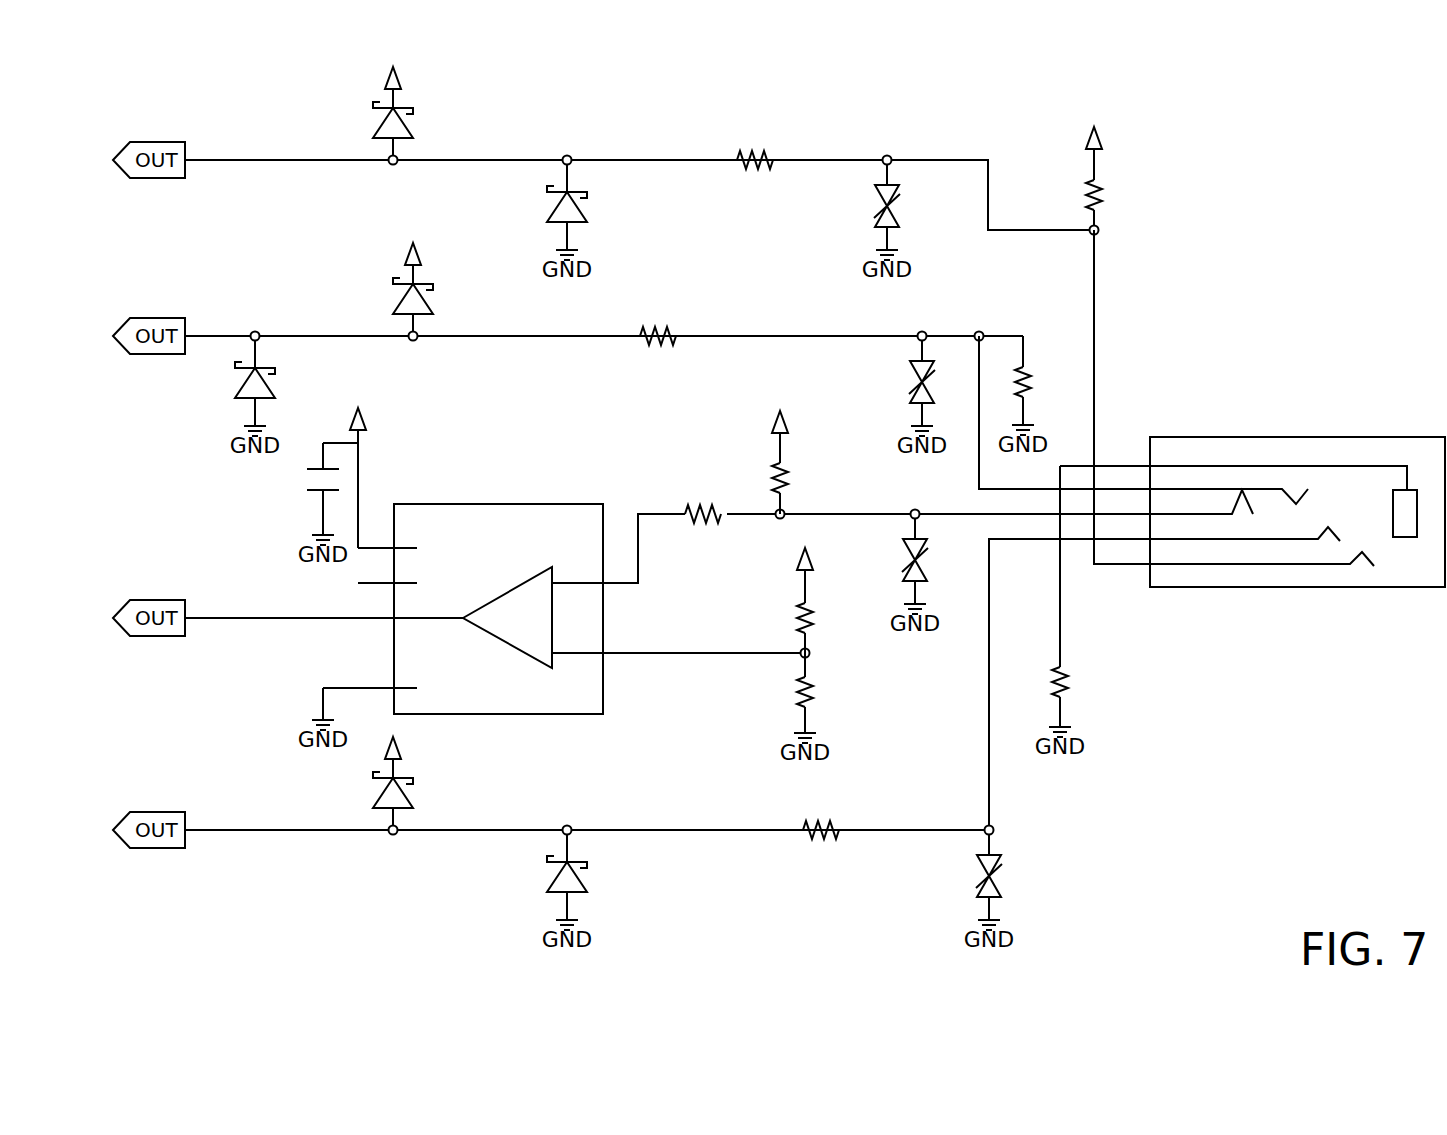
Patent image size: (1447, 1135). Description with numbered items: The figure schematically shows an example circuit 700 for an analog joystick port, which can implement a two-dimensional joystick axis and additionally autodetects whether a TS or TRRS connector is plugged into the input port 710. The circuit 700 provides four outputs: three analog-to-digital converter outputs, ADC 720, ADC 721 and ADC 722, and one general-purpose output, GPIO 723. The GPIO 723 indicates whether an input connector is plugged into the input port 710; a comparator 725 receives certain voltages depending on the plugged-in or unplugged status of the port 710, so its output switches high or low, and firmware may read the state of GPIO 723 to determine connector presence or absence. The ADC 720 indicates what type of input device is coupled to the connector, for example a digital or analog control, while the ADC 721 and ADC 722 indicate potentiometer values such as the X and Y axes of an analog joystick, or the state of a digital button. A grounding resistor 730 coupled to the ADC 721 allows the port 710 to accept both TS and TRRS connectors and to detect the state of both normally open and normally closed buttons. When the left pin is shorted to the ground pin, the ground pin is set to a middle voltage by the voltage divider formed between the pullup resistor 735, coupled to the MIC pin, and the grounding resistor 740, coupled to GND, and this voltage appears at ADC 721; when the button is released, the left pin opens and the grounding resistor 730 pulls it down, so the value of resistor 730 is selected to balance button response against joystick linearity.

The circuit 700 is at (1305, 143).
The input port 710 is at (1347, 397).
The ADC 720 is at (153, 125).
The ADC 721 is at (153, 300).
The ADC 722 is at (152, 788).
The GPIO 723 is at (156, 580).
The comparator 725 is at (505, 490).
The grounding resistor 730 is at (1020, 318).
The pullup resistor 735 is at (1113, 178).
The grounding resistor 740 is at (1082, 690).